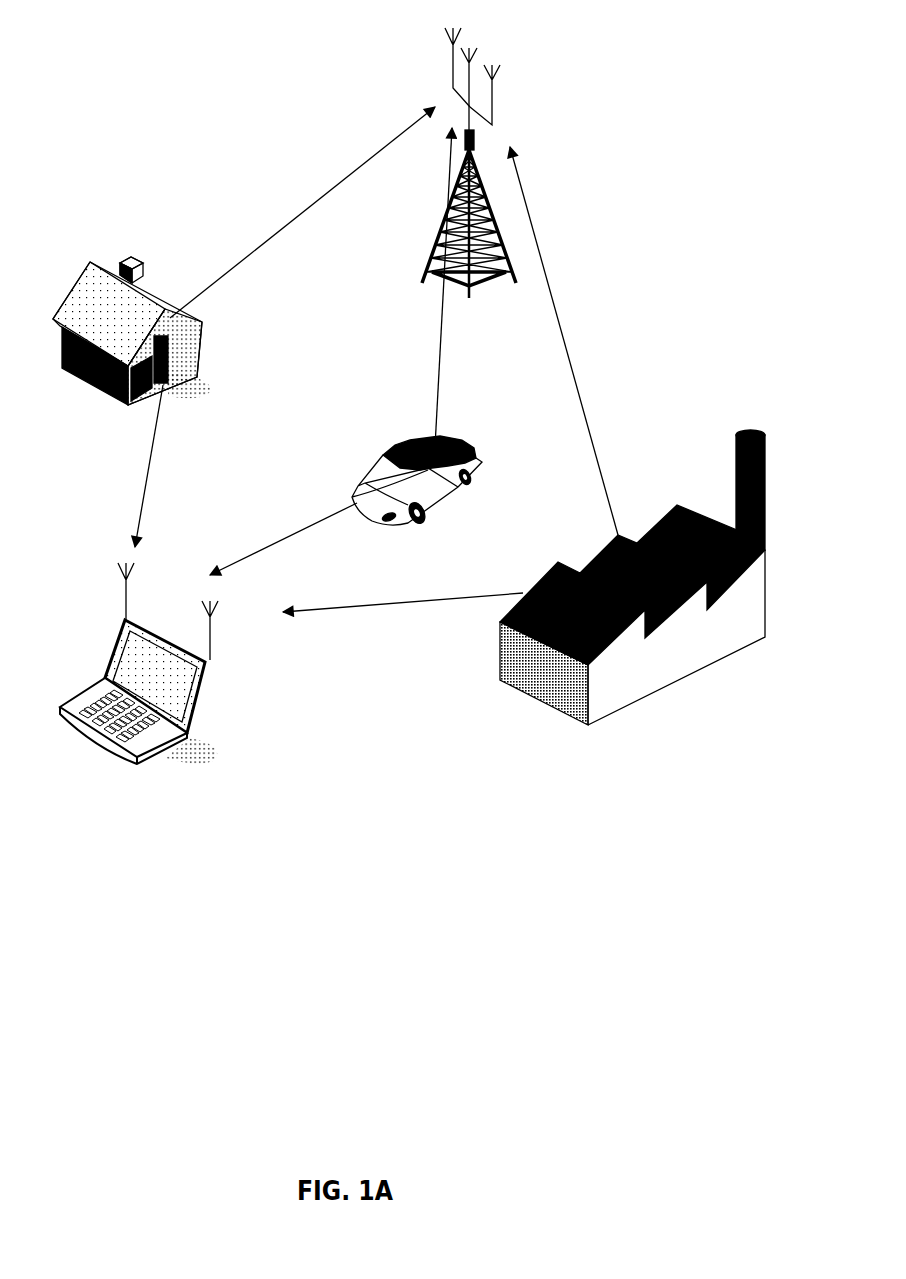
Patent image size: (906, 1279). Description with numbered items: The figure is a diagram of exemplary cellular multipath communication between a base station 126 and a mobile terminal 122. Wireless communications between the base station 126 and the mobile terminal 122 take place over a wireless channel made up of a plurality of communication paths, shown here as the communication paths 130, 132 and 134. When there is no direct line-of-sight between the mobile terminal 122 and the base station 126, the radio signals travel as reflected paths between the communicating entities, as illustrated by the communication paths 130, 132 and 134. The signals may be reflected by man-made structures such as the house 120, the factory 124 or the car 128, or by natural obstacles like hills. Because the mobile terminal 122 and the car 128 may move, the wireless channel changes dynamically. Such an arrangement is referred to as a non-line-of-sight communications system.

The house 120 is at (90, 262).
The mobile terminal 122 is at (203, 683).
The factory 124 is at (603, 715).
The base station 126 is at (469, 296).
The car 128 is at (421, 524).
The communication path 130 is at (250, 258).
The communication path 132 is at (438, 393).
The communication path 134 is at (572, 365).